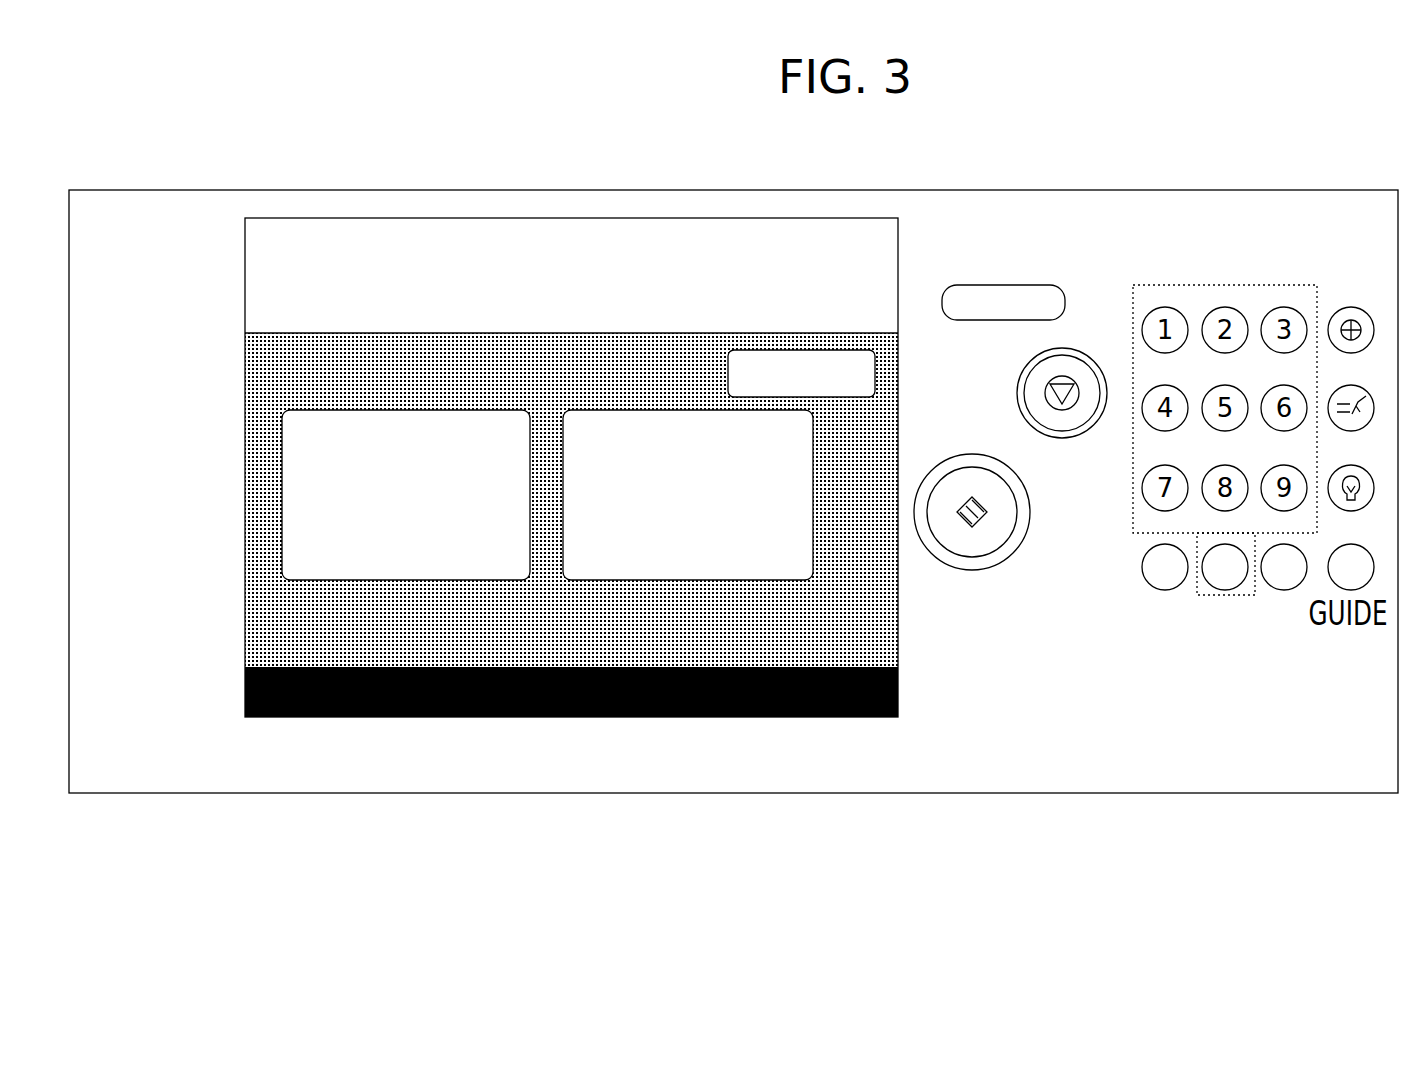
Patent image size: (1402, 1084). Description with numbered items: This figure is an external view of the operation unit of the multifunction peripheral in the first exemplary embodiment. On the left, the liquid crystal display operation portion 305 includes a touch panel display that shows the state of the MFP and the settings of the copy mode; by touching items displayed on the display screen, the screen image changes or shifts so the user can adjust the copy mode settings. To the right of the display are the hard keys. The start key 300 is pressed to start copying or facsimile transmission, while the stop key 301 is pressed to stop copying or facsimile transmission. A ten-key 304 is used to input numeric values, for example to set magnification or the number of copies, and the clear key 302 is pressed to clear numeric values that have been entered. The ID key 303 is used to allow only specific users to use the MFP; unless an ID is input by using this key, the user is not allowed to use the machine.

The start key 300 is at (972, 571).
The stop key 301 is at (1017, 388).
The clear key 302 is at (1165, 590).
The ID key 303 is at (1284, 590).
The ten-key 304 is at (1225, 590).
The liquid crystal display operation portion 305 is at (575, 718).